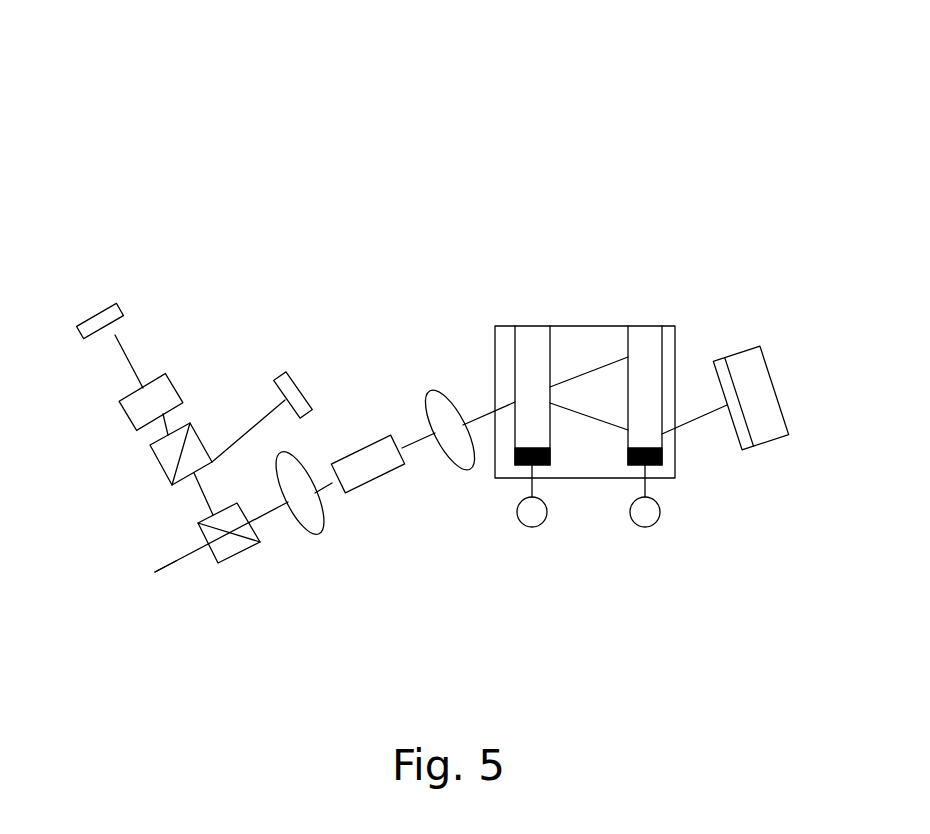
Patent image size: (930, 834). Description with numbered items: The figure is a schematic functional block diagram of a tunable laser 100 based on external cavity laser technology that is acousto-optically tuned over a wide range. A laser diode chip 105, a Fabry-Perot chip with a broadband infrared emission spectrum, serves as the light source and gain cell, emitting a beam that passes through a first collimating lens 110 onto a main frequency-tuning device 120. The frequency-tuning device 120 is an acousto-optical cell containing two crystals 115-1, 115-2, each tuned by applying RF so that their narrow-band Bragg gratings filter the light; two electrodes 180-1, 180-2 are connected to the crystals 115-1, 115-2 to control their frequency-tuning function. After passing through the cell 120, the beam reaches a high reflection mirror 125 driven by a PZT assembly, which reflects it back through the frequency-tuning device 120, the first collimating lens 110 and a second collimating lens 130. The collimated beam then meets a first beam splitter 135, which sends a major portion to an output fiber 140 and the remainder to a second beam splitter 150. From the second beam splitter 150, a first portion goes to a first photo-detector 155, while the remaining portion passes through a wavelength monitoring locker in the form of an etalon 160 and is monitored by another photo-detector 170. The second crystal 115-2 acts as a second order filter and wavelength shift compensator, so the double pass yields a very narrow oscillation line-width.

The tunable laser 100 is at (122, 91).
The laser diode chip 105 is at (360, 478).
The first collimating lens 110 is at (455, 413).
The acousto-optical crystal 115-1 is at (525, 333).
The acousto-optical crystal 115-2 is at (652, 333).
The frequency-tuning device 120 is at (603, 333).
The high reflection mirror 125 is at (728, 370).
The second collimating lens 130 is at (305, 512).
The first beam splitter 135 is at (230, 547).
The output fiber 140 is at (183, 560).
The second beam splitter 150 is at (160, 450).
The first photo-detector 155 is at (293, 388).
The etalon 160 is at (136, 412).
The photo-detector 170 is at (112, 318).
The electrode 180-1 is at (528, 512).
The electrode 180-2 is at (652, 517).